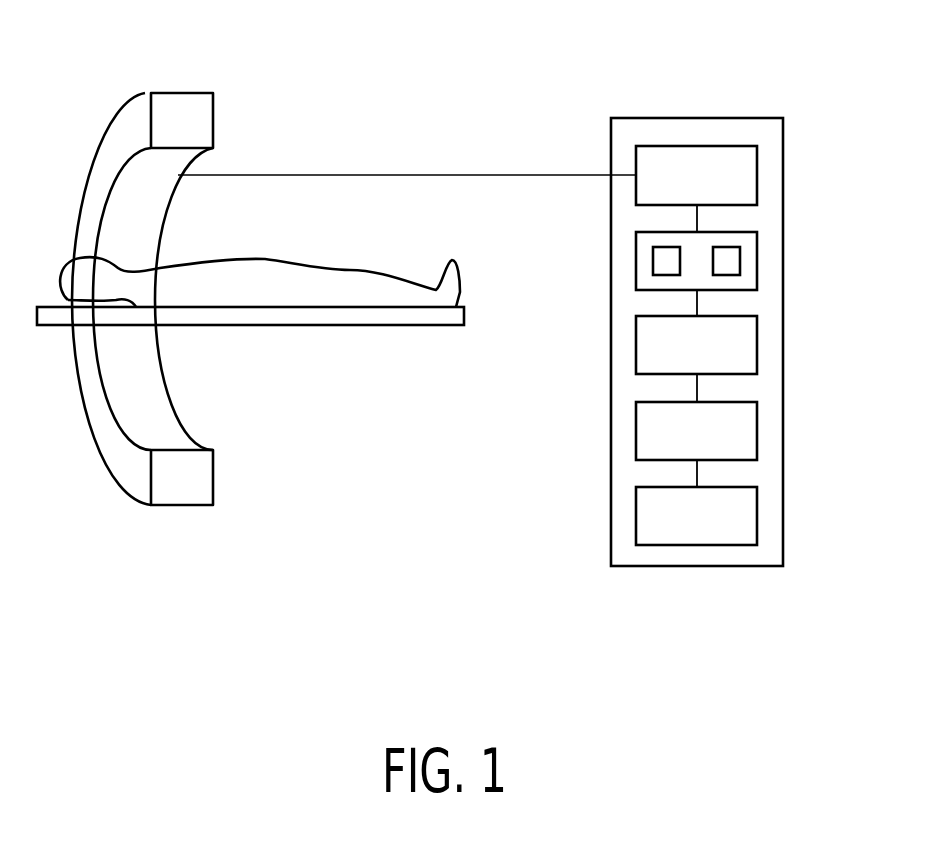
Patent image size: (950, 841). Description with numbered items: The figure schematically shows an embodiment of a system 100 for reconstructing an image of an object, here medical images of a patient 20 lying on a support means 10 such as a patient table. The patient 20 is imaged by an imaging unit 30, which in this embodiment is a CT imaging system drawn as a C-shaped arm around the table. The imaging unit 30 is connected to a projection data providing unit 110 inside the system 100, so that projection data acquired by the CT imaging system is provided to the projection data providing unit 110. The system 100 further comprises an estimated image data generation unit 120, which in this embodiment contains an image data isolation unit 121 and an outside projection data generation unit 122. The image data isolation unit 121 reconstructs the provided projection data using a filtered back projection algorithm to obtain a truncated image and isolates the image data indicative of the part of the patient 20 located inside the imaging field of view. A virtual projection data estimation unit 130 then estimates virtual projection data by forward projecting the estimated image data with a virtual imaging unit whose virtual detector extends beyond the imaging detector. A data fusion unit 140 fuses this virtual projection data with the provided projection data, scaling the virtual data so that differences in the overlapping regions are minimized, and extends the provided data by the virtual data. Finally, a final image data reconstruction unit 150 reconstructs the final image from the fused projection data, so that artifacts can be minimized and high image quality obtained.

The support means 10 is at (335, 325).
The patient 20 is at (371, 272).
The imaging unit 30 is at (192, 93).
The system 100 is at (715, 118).
The projection data providing unit 110 is at (757, 177).
The estimated image data generation unit 120 is at (757, 243).
The image data isolation unit 121 is at (653, 265).
The outside projection data generation unit 122 is at (740, 265).
The virtual projection data estimation unit 130 is at (757, 345).
The data fusion unit 140 is at (757, 434).
The final image data reconstruction unit 150 is at (757, 519).